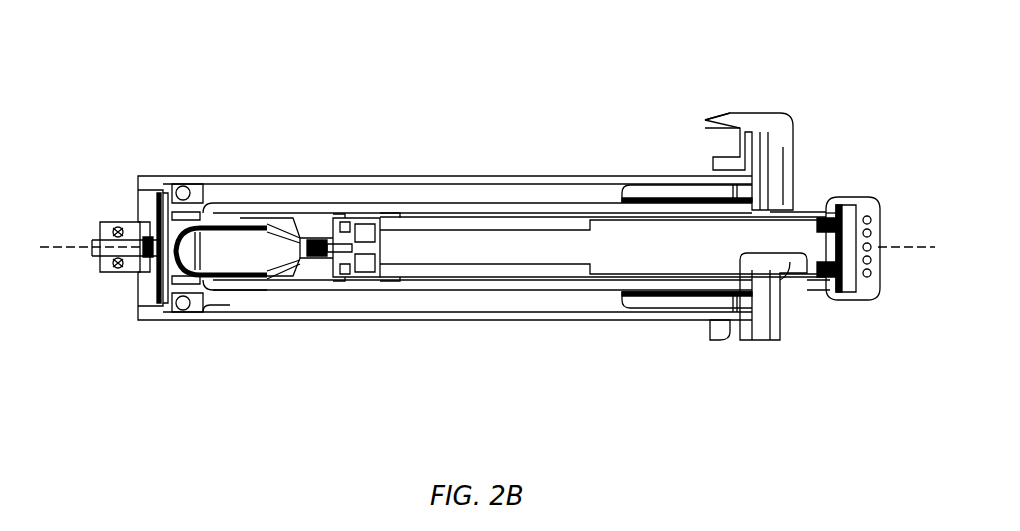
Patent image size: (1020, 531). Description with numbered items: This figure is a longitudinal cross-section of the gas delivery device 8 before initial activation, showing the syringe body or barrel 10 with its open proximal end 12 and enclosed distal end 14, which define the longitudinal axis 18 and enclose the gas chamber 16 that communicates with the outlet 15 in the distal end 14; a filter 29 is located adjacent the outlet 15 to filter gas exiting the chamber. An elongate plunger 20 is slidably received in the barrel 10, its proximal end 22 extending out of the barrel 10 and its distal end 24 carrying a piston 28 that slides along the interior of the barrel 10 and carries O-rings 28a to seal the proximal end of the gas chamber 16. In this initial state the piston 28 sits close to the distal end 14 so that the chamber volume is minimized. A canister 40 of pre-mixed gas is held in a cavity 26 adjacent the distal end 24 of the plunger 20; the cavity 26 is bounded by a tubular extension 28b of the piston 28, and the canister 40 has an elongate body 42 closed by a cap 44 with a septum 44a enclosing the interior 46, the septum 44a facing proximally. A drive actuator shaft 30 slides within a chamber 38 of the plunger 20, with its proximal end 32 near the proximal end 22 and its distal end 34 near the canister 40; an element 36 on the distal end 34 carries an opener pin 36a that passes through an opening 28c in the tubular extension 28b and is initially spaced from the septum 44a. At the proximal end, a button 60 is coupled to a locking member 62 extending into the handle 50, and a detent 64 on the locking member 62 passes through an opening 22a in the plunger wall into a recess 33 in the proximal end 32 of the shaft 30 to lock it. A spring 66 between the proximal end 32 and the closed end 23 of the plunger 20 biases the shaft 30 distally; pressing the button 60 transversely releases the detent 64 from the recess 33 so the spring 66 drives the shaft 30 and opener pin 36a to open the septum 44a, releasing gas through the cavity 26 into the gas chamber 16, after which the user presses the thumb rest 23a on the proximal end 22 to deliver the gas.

The device 8 is at (581, 100).
The barrel 10 is at (507, 333).
The open proximal end 12 is at (710, 308).
The enclosed distal end 14 is at (163, 322).
The outlet 15 is at (118, 252).
The gas chamber 16 is at (227, 306).
The longitudinal axis 18 is at (48, 252).
The plunger 20 is at (436, 298).
The proximal end of plunger 22 is at (813, 292).
The opening 22a is at (752, 342).
The closed end 23 is at (870, 222).
The thumb rest 23a is at (876, 272).
The distal end of plunger 24 is at (233, 291).
The cavity 26 is at (282, 284).
The piston 28 is at (170, 192).
The O-rings 28a is at (188, 310).
The tubular extension 28b is at (300, 272).
The opening 28c is at (333, 262).
The filter 29 is at (158, 282).
The drive actuator shaft 30 is at (597, 214).
The proximal end of shaft 32 is at (807, 212).
The recess 33 is at (775, 290).
The distal end of shaft 34 is at (405, 206).
The element 36 is at (365, 222).
The opener pin 36a is at (340, 210).
The chamber 38 is at (562, 268).
The canister 40 is at (266, 243).
The elongate body 42 is at (216, 224).
The cap 44 is at (318, 243).
The septum 44a is at (292, 240).
The interior of canister 46 is at (234, 235).
The handle 50 is at (786, 127).
The button 60 is at (719, 120).
The locking member 62 is at (762, 153).
The detent 64 is at (743, 262).
The spring 66 is at (829, 213).